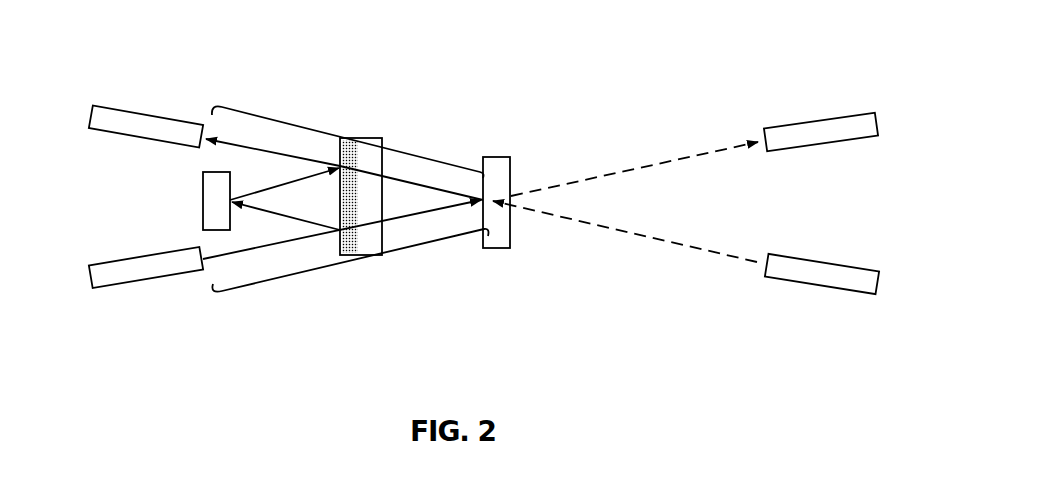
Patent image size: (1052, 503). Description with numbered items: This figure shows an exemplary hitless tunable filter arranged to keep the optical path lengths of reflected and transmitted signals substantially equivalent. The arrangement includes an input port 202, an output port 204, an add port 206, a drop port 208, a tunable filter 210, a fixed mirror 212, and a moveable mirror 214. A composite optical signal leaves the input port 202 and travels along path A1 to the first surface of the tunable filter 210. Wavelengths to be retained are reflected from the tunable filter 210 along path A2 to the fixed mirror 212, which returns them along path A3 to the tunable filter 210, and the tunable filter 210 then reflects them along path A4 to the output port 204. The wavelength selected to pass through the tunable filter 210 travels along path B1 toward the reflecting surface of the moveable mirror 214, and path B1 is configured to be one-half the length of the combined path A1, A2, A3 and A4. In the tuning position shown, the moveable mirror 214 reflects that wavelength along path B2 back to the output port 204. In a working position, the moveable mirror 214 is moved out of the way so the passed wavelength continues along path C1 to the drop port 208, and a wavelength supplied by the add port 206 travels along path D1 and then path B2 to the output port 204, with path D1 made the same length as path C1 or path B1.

The input port 202 is at (103, 287).
The output port 204 is at (108, 107).
The add port 206 is at (845, 289).
The drop port 208 is at (838, 118).
The tunable filter 210 is at (383, 140).
The fixed mirror 212 is at (203, 200).
The moveable mirror 214 is at (494, 157).
The path A1 is at (342, 229).
The path A2 is at (286, 214).
The path A3 is at (284, 183).
The path A4 is at (344, 168).
The path B1 is at (358, 270).
The path B2 is at (354, 134).
The path C1 is at (634, 169).
The path D1 is at (625, 234).